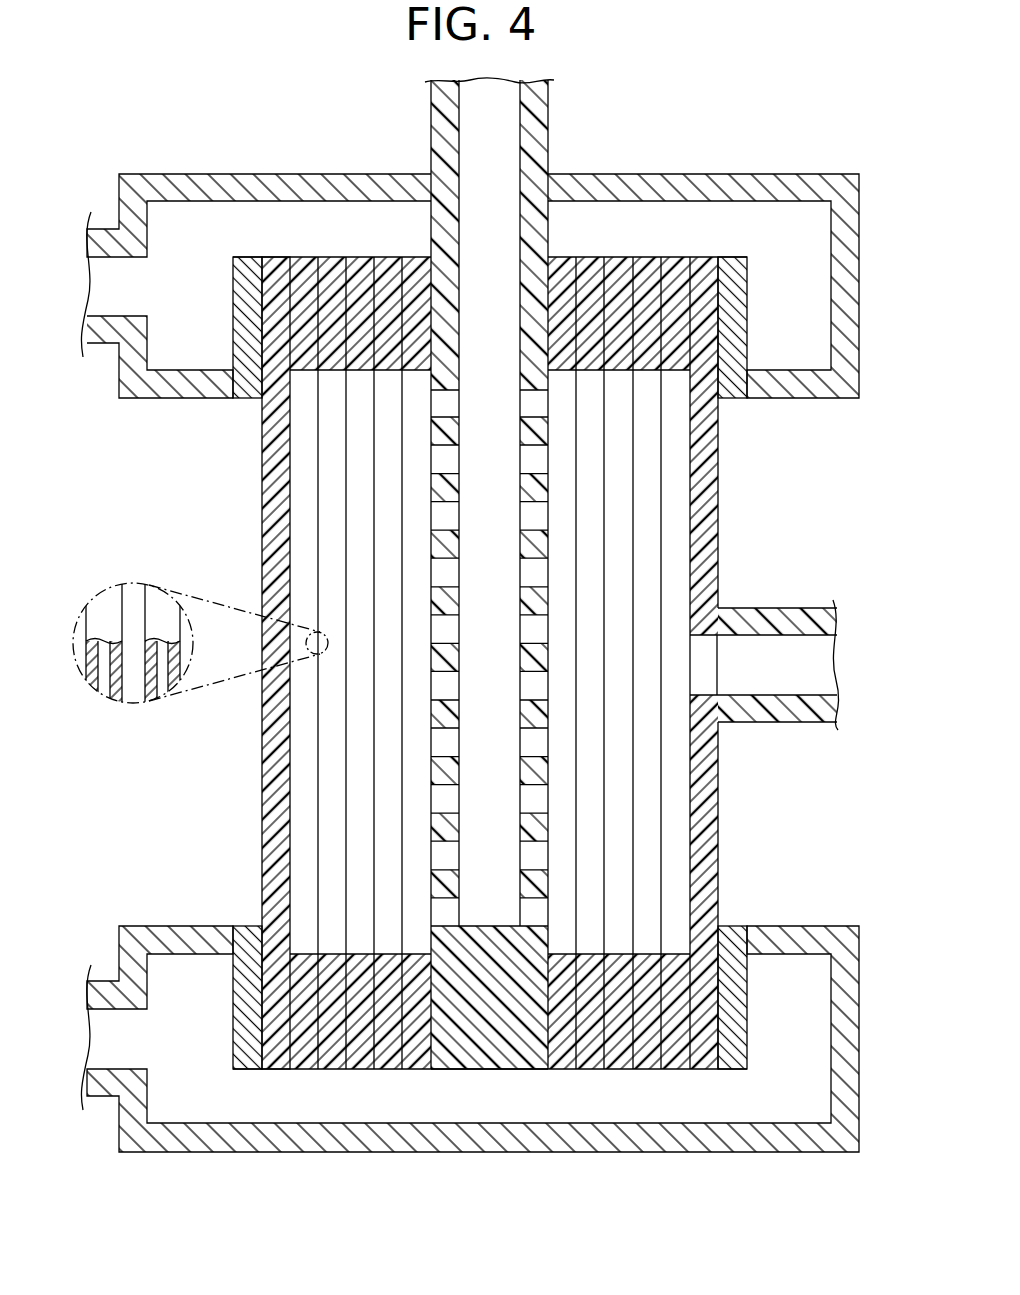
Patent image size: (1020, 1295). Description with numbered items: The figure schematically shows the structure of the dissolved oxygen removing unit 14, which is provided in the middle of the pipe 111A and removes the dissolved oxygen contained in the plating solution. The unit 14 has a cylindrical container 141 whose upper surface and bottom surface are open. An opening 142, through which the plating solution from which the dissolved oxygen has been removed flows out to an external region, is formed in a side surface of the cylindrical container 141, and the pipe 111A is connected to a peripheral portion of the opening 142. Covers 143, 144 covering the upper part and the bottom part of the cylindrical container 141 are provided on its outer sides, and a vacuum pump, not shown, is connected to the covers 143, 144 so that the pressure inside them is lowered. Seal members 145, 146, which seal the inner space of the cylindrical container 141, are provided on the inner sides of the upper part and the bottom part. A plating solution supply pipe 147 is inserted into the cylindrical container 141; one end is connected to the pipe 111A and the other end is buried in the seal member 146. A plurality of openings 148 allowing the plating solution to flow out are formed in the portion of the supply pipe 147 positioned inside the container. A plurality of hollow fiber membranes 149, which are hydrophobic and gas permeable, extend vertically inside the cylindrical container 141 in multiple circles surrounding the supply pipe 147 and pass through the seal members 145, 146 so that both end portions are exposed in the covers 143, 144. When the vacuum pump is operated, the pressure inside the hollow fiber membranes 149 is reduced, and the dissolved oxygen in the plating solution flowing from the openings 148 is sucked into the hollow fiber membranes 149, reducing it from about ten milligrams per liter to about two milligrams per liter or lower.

The dissolved oxygen removing unit 14 is at (676, 150).
The pipe 111A is at (770, 610).
The cylindrical container 141 is at (262, 458).
The opening 142 is at (707, 670).
The cover 143 is at (773, 174).
The cover 144 is at (686, 1152).
The seal member 145 is at (681, 362).
The seal member 146 is at (705, 918).
The plating solution supply pipe 147 is at (431, 131).
The openings 148 is at (538, 515).
The hollow fiber membranes 149 is at (105, 600).